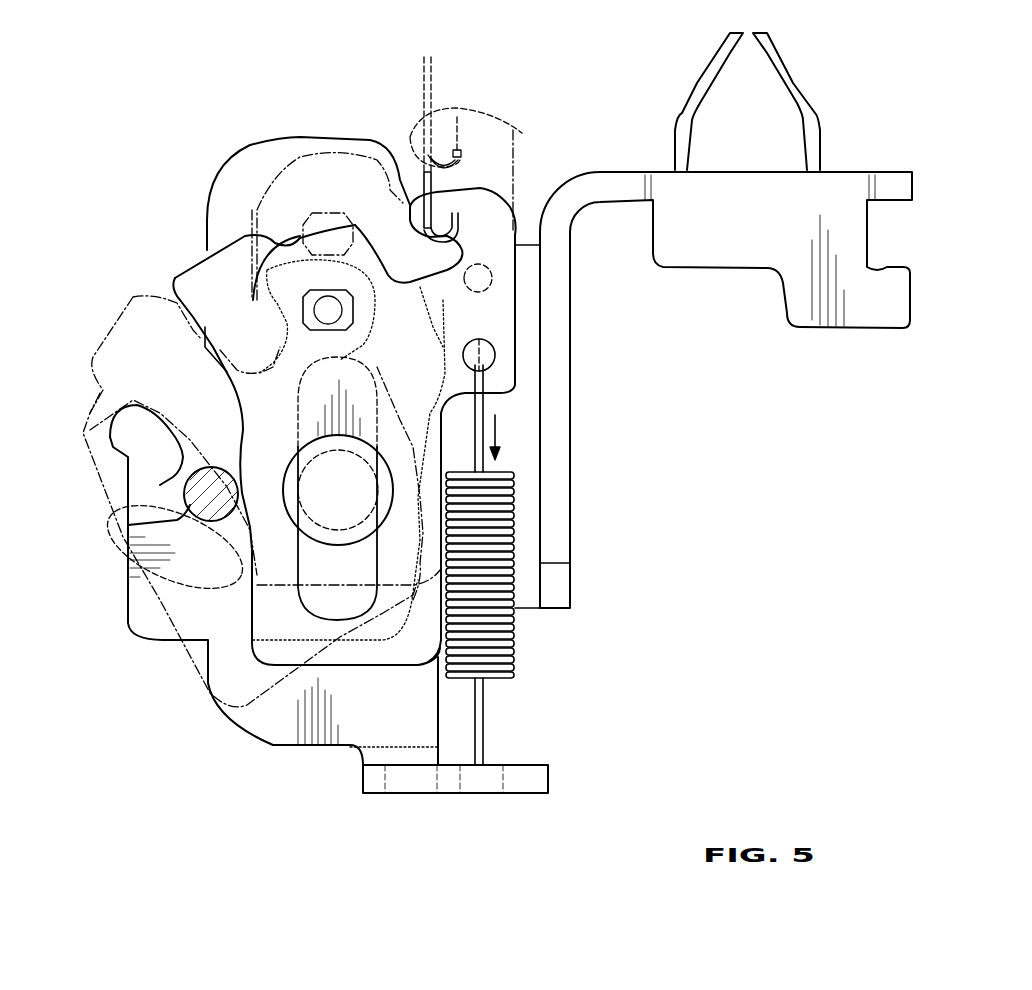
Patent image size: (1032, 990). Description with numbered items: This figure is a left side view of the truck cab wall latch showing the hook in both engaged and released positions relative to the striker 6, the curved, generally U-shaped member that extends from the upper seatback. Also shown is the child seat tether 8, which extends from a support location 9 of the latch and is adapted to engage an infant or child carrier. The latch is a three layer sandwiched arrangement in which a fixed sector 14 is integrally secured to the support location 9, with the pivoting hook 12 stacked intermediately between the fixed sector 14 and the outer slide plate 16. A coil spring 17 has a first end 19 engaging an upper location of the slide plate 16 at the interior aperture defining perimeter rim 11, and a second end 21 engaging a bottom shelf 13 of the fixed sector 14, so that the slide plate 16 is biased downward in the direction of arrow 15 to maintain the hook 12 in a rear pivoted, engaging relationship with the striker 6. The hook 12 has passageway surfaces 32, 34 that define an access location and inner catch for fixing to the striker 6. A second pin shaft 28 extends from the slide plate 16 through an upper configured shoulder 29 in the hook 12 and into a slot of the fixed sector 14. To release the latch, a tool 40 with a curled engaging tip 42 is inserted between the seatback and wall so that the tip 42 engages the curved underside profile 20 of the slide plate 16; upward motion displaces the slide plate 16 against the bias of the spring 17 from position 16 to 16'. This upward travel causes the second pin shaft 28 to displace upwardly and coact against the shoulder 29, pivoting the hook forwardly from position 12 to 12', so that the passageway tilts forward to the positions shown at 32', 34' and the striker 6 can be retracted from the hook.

The striker 6 is at (128, 525).
The child seat tether 8 is at (703, 88).
The support location 9 is at (720, 260).
The interior aperture defining perimeter rim 11 is at (500, 352).
The pivoting hook 12 is at (295, 472).
The forward pivoted hook position 12' is at (250, 482).
The bottom shelf 13 is at (487, 793).
The fixed sector 14 is at (260, 157).
The arrow 15 is at (500, 428).
The slide plate 16 is at (494, 402).
The upwardly displaced slide plate position 16' is at (522, 141).
The coil spring 17 is at (500, 620).
The first end 19 is at (488, 372).
The curved underside profile 20 is at (453, 167).
The second end 21 is at (482, 752).
The second pin shaft 28 is at (322, 297).
The upper configured shoulder 29 is at (372, 272).
The passageway surface 32 is at (191, 494).
The forward tilted passageway surface 32' is at (175, 550).
The passageway surface 34 is at (187, 356).
The forward tilted passageway surface 34' is at (70, 420).
The tool 40 is at (425, 83).
The curled engaging tip 42 is at (458, 117).